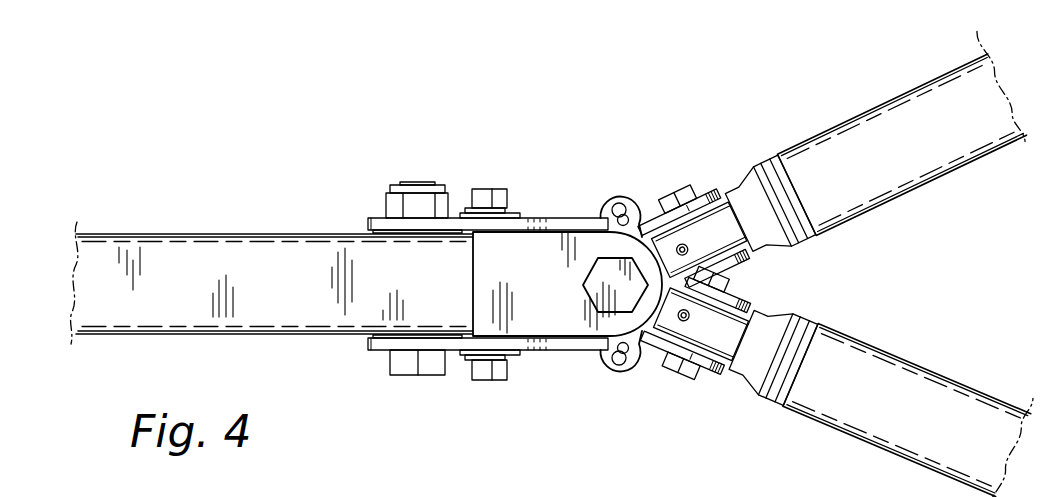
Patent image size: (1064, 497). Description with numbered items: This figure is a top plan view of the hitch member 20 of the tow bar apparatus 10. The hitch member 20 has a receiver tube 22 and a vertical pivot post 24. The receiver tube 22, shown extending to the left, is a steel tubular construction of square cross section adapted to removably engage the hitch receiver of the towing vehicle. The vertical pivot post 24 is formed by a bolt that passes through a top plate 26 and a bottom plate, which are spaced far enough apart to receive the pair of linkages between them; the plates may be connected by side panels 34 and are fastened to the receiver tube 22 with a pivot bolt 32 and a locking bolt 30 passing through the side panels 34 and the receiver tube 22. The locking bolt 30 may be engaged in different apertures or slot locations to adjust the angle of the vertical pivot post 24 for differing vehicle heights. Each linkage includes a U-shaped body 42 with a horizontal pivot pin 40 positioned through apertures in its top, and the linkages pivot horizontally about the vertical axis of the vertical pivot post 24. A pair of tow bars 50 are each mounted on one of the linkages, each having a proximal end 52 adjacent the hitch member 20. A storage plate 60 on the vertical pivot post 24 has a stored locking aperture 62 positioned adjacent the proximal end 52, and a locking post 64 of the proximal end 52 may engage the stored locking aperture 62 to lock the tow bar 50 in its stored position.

The tow bar apparatus 10 is at (554, 94).
The hitch member 20 is at (626, 158).
The receiver tube 22 is at (297, 235).
The vertical pivot post 24 is at (587, 282).
The top plate 26 is at (559, 326).
The locking bolt 30 is at (493, 189).
The pivot bolt 32 is at (418, 182).
The side panels 34 is at (558, 218).
The horizontal pivot pin 40 is at (680, 185).
The U-shaped body 42 is at (712, 190).
The tow bars 50 is at (835, 332).
The proximal end 52 is at (833, 132).
The storage plate 60 is at (622, 367).
The stored locking aperture 62 is at (598, 355).
The locking post 64 is at (690, 317).